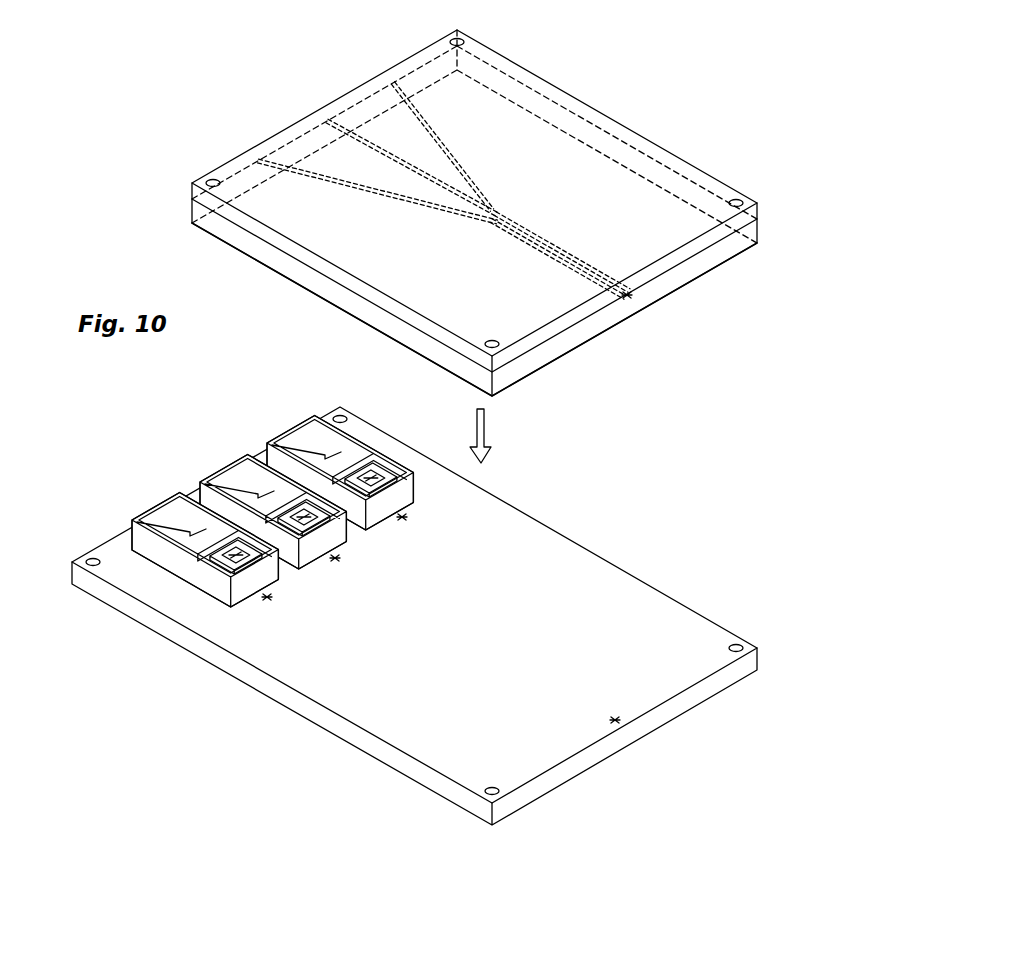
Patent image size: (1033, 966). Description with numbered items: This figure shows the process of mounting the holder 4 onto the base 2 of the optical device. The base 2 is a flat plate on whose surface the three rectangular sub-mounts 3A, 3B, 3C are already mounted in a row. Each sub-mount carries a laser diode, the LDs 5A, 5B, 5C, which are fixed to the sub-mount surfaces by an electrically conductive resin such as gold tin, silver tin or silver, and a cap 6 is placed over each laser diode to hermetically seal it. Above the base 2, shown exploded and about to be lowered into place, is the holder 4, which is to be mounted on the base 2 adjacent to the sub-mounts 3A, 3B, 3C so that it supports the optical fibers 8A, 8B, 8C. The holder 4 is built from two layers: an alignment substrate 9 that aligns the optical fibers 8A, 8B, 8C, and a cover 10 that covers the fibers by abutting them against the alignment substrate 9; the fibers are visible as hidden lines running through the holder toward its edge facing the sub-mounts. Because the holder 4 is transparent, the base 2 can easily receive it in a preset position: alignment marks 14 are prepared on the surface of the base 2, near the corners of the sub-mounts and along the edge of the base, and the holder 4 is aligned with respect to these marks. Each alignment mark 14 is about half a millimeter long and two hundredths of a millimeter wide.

The base 2 is at (618, 607).
The holder 4 is at (583, 94).
The sub-mount 3A is at (140, 513).
The sub-mount 3B is at (208, 470).
The sub-mount 3C is at (280, 432).
The LD 5A is at (246, 543).
The LD 5B is at (320, 514).
The LD 5C is at (382, 479).
The cap 6 is at (400, 466).
The optical fiber 8A is at (372, 190).
The optical fiber 8B is at (380, 153).
The optical fiber 8C is at (437, 148).
The alignment substrate 9 is at (622, 313).
The cover 10 is at (677, 257).
The alignment mark 14 is at (273, 590).